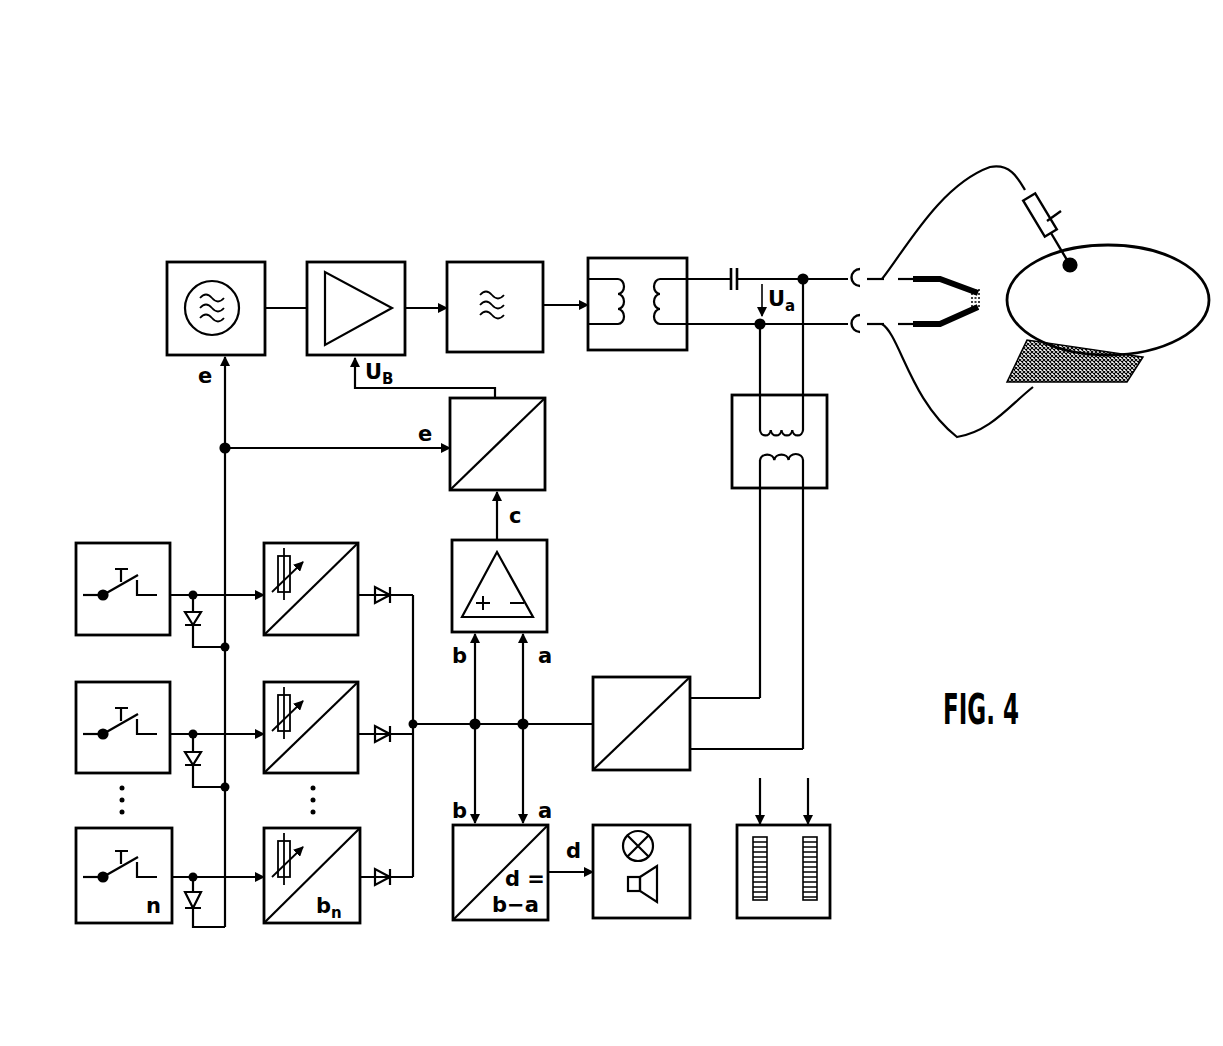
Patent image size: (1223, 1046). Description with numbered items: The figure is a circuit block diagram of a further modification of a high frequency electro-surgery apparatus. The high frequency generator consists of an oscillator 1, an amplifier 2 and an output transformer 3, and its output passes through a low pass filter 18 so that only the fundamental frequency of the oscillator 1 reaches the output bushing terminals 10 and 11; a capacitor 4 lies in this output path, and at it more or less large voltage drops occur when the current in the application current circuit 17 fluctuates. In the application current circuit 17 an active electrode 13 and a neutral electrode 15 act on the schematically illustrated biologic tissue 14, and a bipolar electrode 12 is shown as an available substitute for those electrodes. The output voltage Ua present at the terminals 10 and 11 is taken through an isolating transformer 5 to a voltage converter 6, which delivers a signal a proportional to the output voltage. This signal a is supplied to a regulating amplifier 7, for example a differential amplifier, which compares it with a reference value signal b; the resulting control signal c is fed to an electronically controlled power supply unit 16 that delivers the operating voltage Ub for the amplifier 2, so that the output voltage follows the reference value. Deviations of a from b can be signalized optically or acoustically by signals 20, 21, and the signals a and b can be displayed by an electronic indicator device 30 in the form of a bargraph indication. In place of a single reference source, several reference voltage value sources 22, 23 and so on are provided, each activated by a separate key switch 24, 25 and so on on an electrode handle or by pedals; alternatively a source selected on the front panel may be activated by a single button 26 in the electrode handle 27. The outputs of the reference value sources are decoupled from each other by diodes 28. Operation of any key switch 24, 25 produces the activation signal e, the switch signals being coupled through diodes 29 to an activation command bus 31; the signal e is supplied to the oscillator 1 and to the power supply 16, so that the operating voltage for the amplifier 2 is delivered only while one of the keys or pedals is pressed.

The oscillator 1 is at (232, 268).
The amplifier 2 is at (372, 265).
The low pass filter 18 is at (511, 262).
The output transformer 3 is at (642, 258).
The capacitor 4 is at (734, 266).
The isolating transformer 5 is at (732, 428).
The voltage converter 6 is at (657, 677).
The regulating amplifier 7 is at (541, 557).
The output bushing terminal 10 is at (849, 267).
The output bushing terminal 11 is at (851, 334).
The bipolar electrode 12 is at (945, 277).
The active electrode 13 is at (1064, 272).
The biologic tissue 14 is at (1138, 254).
The neutral electrode 15 is at (1090, 385).
The electronically controlled power supply unit 16 is at (540, 437).
The application current circuit 17 is at (964, 376).
The optical signal 20 is at (613, 828).
The acoustic signal 21 is at (658, 875).
The reference voltage value source 22 is at (360, 560).
The reference voltage value source 23 is at (360, 699).
The key switch 24 is at (164, 561).
The key switch 25 is at (164, 700).
The single button 26 is at (1057, 214).
The electrode handle 27 is at (1030, 211).
The diode 28 is at (388, 606).
The diode 29 is at (190, 626).
The electronic indicator device 30 is at (830, 853).
The activation command bus 31 is at (226, 515).